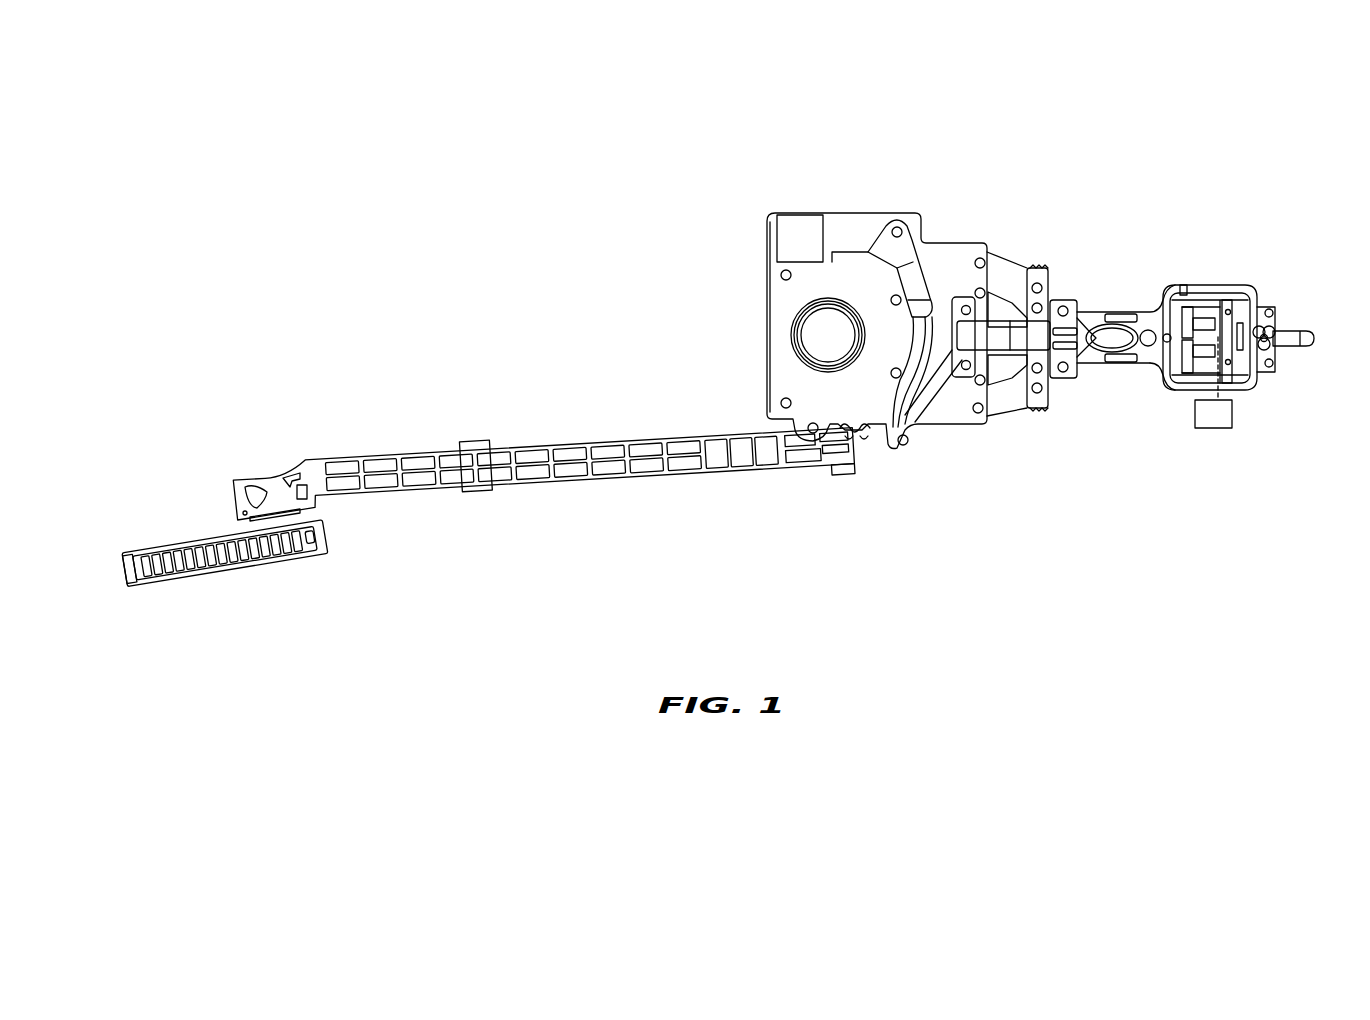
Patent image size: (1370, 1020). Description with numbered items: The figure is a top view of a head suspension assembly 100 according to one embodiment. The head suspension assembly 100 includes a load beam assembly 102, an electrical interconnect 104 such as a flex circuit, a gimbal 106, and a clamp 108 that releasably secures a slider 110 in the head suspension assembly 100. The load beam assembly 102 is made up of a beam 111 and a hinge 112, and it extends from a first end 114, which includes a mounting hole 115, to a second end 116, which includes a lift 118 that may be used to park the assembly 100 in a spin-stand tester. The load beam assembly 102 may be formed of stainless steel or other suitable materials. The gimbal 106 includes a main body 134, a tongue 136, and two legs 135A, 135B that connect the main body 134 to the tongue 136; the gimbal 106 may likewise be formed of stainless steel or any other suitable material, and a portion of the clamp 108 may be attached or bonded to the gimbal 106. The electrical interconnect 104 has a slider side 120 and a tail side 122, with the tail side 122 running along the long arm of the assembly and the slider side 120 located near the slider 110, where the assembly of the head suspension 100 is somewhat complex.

The head suspension assembly 100 is at (638, 142).
The load beam assembly 102 is at (1038, 252).
The electrical interconnect 104 is at (912, 403).
The gimbal 106 is at (1140, 313).
The clamp 108 is at (1202, 312).
The slider 110 is at (1218, 428).
The beam 111 is at (1087, 373).
The hinge 112 is at (965, 405).
The first end 114 is at (735, 302).
The mounting hole 115 is at (823, 337).
The second end 116 is at (1308, 374).
The lift 118 is at (1298, 334).
The slider side/slider end 120 is at (1239, 412).
The tail side/tail end 122 is at (193, 483).
The main body 134 is at (1140, 355).
The leg 135A is at (1173, 303).
The leg 135B is at (1178, 378).
The tongue 136 is at (1247, 345).